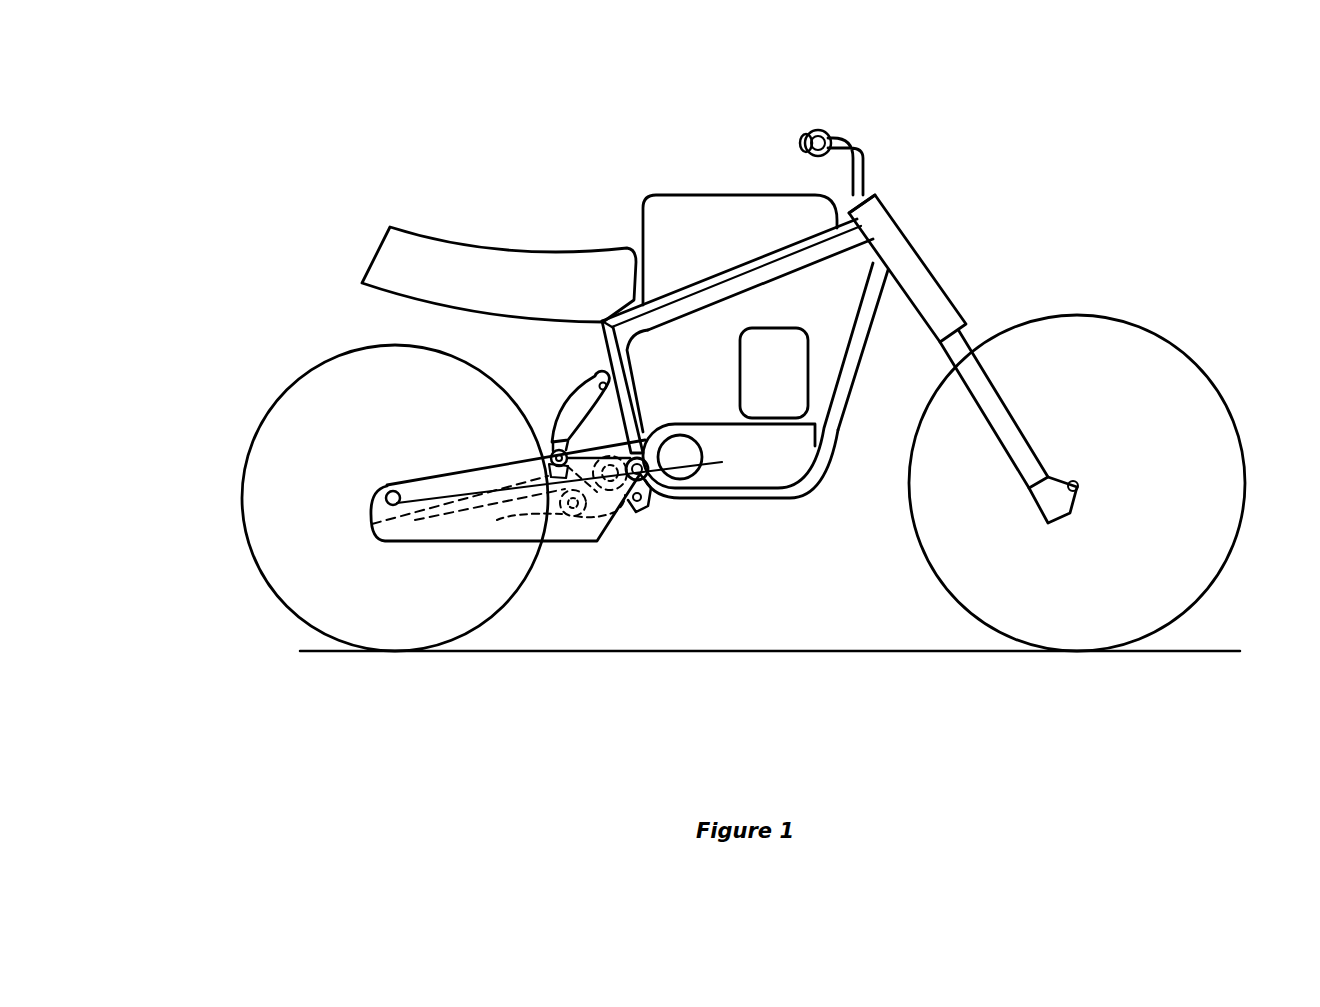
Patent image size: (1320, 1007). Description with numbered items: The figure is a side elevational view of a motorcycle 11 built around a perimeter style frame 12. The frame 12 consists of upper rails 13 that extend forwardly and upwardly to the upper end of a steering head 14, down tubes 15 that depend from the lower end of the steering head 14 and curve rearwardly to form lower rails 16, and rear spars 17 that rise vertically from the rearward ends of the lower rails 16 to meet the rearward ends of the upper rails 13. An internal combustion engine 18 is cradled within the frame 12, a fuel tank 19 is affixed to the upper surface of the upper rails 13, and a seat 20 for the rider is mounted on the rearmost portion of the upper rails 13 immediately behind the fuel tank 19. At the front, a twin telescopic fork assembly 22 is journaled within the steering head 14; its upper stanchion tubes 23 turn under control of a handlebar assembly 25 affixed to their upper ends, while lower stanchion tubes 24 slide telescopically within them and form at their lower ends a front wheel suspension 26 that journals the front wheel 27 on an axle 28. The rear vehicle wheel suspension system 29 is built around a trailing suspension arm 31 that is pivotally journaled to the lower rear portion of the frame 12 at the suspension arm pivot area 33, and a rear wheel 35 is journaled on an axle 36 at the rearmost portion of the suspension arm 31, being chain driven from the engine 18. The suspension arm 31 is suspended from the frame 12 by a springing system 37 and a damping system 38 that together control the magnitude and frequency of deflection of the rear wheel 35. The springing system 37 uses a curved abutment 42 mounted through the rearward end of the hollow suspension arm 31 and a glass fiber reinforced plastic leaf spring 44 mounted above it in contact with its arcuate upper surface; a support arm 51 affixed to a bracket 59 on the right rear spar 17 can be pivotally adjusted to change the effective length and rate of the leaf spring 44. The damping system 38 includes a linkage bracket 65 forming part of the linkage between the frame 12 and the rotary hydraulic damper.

The motorcycle 11 is at (1047, 185).
The frame 12 is at (705, 273).
The upper rails 13 is at (793, 262).
The steering head 14 is at (890, 213).
The down tubes 15 is at (868, 337).
The lower rails 16 is at (700, 500).
The rear spars 17 is at (648, 423).
The internal combustion engine 18 is at (813, 358).
The fuel tank 19 is at (732, 192).
The seat 20 is at (463, 247).
The twin telescopic fork assembly 22 is at (960, 322).
The upper stanchion tubes 23 is at (908, 237).
The lower stanchion tubes 24 is at (1020, 427).
The handlebar assembly 25 is at (845, 137).
The front wheel suspension 26 is at (1083, 467).
The front wheel 27 is at (1188, 353).
The axle 28 is at (1079, 489).
The rear vehicle wheel suspension system 29 is at (545, 407).
The trailing suspension arm 31 is at (407, 485).
The suspension arm pivot area 33 is at (645, 505).
The rear wheel 35 is at (278, 402).
The axle 36 is at (380, 493).
The springing system 37 is at (443, 470).
The damping system 38 is at (618, 420).
The curved abutment 42 is at (497, 520).
The leaf spring 44 is at (485, 487).
The support arm 51 is at (593, 332).
The bracket 59 is at (593, 380).
The linkage bracket 65 is at (593, 513).